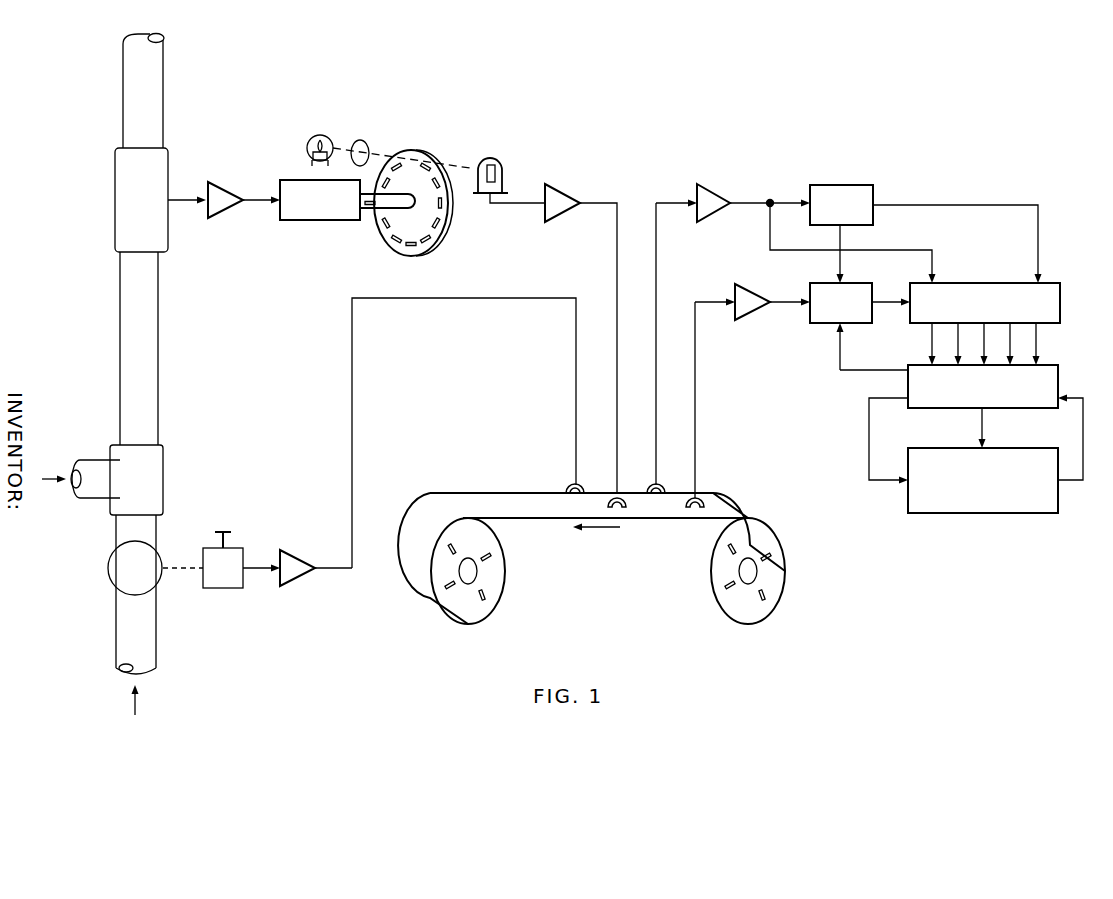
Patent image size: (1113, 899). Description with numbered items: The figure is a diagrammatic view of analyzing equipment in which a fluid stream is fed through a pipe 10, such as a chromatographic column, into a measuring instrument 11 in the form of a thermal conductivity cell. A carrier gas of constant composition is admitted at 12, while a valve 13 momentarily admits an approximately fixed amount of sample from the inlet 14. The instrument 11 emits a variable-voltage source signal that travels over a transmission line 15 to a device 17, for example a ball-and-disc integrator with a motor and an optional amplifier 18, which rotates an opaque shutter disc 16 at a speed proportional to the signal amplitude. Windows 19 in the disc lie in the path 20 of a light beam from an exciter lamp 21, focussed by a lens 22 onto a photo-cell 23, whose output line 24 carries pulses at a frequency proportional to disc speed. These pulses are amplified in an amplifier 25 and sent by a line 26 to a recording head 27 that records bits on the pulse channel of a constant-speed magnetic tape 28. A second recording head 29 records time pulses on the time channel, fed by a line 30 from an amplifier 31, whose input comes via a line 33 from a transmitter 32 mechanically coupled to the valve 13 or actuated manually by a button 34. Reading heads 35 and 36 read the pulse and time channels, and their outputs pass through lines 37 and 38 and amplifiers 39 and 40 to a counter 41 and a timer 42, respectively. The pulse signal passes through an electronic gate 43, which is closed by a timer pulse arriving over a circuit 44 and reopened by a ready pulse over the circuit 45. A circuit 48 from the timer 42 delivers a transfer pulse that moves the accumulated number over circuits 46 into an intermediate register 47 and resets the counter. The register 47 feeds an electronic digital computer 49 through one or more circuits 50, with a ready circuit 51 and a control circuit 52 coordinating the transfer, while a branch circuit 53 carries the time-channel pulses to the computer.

The pipe 10 is at (152, 412).
The measuring instrument 11 is at (120, 196).
The carrier gas inlet 12 is at (95, 460).
The valve 13 is at (110, 583).
The inlet 14 is at (152, 632).
The transmission line 15 is at (188, 198).
The opaque shutter disc 16 is at (444, 238).
The disc rotating device 17 is at (314, 212).
The amplifier 18 is at (224, 212).
The windows 19 is at (400, 252).
The light beam path 20 is at (462, 170).
The exciter lamp 21 is at (308, 142).
The lens 22 is at (365, 142).
The photo-cell 23 is at (498, 158).
The output line 24 is at (520, 205).
The amplifier 25 is at (566, 193).
The line 26 is at (617, 278).
The recording head 27 is at (612, 498).
The magnetic tape 28 is at (518, 514).
The second recording head 29 is at (570, 486).
The line 30 is at (352, 428).
The amplifier 31 is at (294, 580).
The transmitter 32 is at (222, 585).
The line 33 is at (262, 565).
The button 34 is at (225, 530).
The reading head 35 is at (688, 498).
The reading head 36 is at (650, 487).
The line 37 is at (697, 393).
The line 38 is at (656, 286).
The amplifier 39 is at (750, 296).
The amplifier 40 is at (708, 185).
The counter 41 is at (992, 283).
The timer 42 is at (820, 185).
The electronic gate 43 is at (818, 283).
The circuit 44 is at (842, 245).
The ready circuit 45 is at (838, 358).
The circuits 46 is at (950, 340).
The intermediate register 47 is at (1045, 365).
The circuit 48 is at (922, 205).
The electronic digital computer 49 is at (940, 513).
The circuits 50 is at (982, 428).
The ready circuit 51 is at (869, 428).
The control circuit 52 is at (1083, 430).
The branch circuit 53 is at (770, 245).